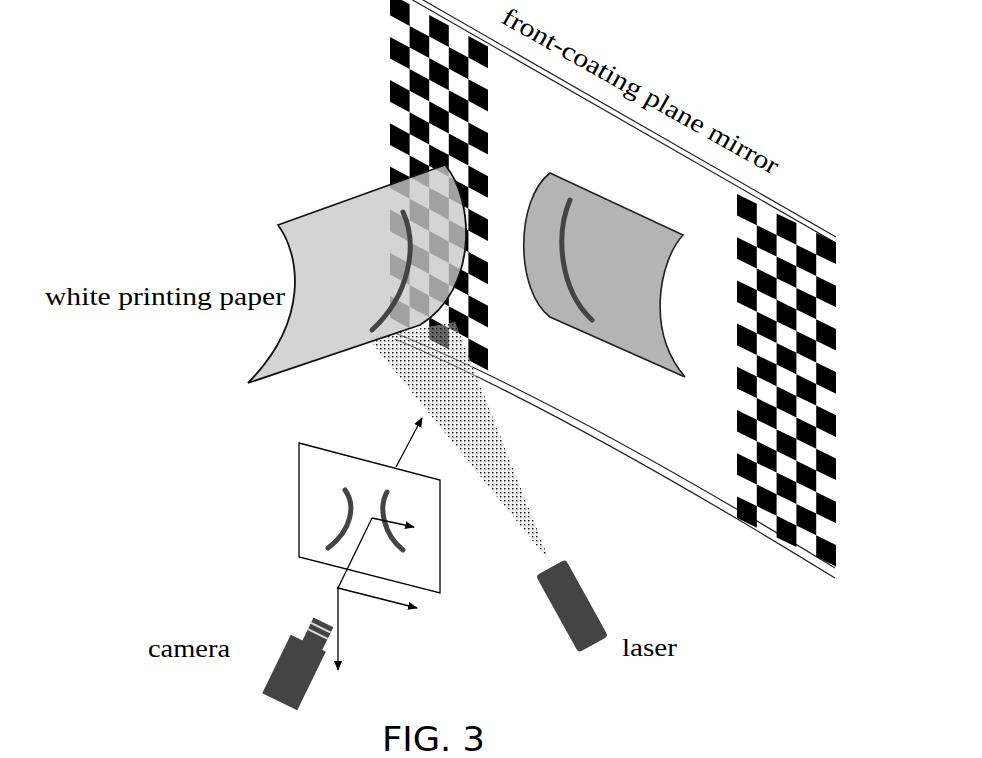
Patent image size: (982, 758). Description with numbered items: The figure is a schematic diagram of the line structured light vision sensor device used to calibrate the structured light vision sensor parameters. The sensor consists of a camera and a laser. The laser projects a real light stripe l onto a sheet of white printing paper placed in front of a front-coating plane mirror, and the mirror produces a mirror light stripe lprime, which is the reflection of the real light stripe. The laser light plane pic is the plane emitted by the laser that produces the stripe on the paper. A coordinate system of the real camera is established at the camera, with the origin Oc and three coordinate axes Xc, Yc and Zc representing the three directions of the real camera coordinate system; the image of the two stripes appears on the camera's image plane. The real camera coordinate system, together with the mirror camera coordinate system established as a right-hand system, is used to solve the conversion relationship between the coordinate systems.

The real light stripe l is at (378, 206).
The mirror light stripe lprime is at (608, 204).
The laser light plane pi_c pic is at (459, 442).
The origin of the coordinate system of the real camera Oc is at (354, 575).
The X coordinate axis of the real camera Xc is at (396, 609).
The Y coordinate axis of the real camera Yc is at (352, 641).
The Z coordinate axis of the real camera Zc is at (396, 442).